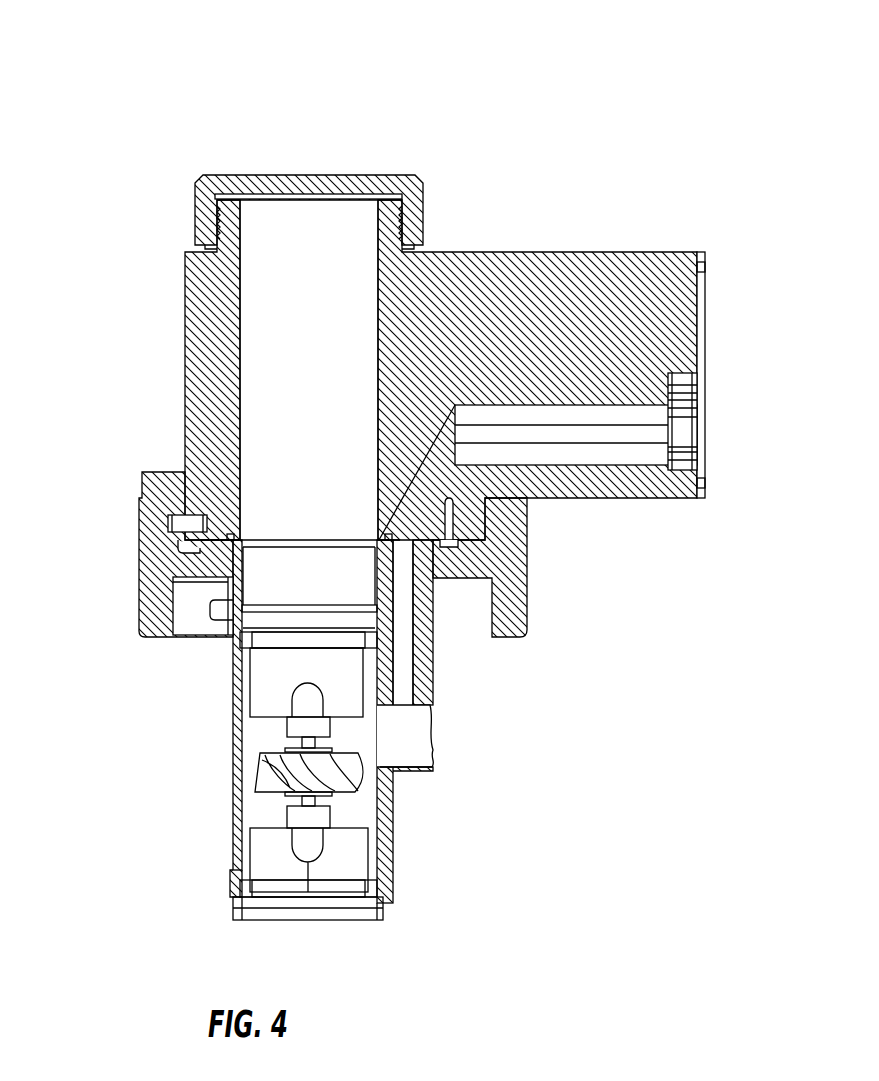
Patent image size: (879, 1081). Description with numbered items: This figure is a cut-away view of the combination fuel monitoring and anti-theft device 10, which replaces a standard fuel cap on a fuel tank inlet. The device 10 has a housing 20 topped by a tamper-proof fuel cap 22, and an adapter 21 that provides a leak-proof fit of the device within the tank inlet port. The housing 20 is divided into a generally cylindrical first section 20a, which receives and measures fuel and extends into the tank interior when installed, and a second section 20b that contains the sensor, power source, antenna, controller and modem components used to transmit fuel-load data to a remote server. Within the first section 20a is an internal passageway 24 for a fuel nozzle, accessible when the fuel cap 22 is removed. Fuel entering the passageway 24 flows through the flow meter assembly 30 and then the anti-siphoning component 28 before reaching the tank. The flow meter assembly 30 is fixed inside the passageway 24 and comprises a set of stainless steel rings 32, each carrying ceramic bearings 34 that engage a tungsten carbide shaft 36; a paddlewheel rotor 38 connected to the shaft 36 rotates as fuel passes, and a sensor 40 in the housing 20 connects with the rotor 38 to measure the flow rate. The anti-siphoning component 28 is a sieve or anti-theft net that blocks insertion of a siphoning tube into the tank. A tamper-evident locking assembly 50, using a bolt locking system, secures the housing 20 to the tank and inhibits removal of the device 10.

The combination fuel monitoring and anti-theft device 10 is at (494, 94).
The housing 20 is at (480, 249).
The first section 20a is at (230, 720).
The second section 20b is at (707, 365).
The adapter 21 is at (137, 535).
The tamper-proof fuel cap 22 is at (418, 185).
The internal passageway 24 is at (307, 374).
The anti-siphoning component 28 is at (368, 908).
The flow meter assembly 30 is at (125, 661).
The stainless steel rings 32 is at (236, 643).
The ceramic bearings 34 is at (330, 662).
The tungsten carbide shaft 36 is at (309, 802).
The paddlewheel rotor 38 is at (358, 789).
The sensor 40 is at (410, 737).
The locking assembly 50 is at (460, 544).